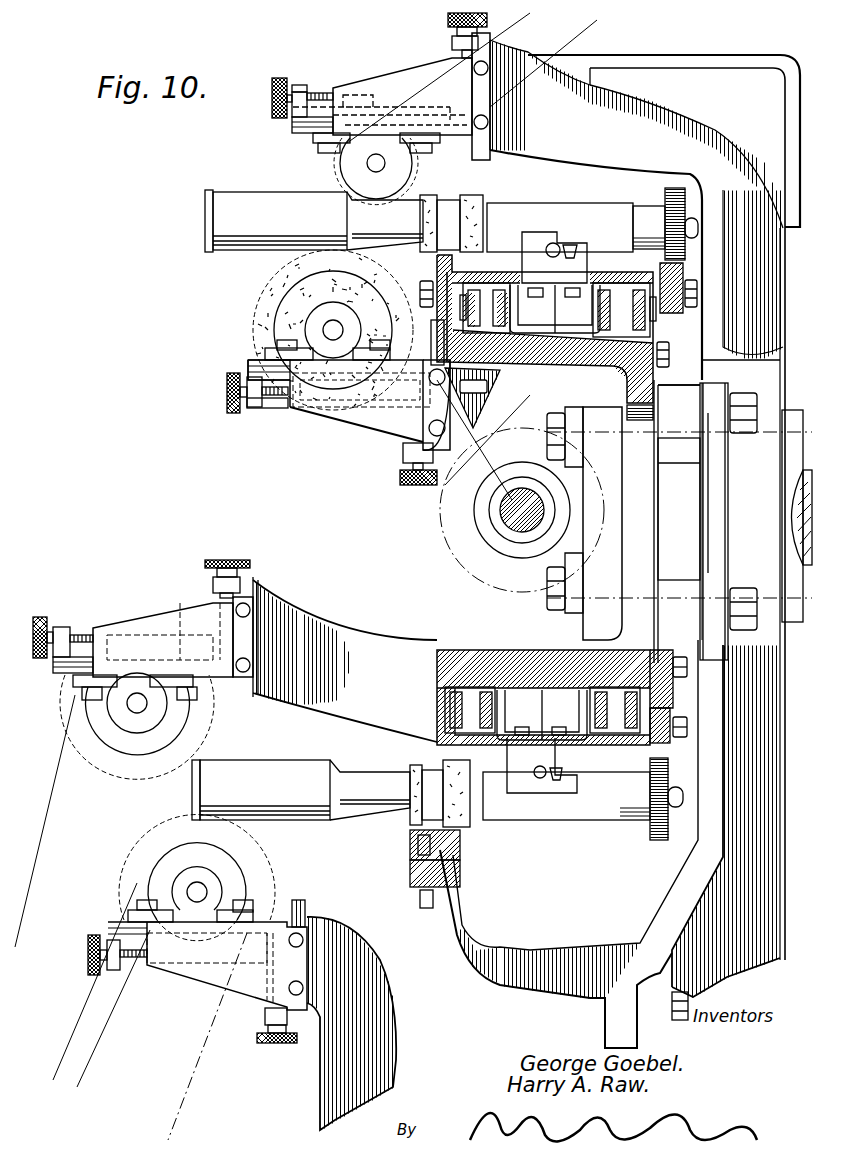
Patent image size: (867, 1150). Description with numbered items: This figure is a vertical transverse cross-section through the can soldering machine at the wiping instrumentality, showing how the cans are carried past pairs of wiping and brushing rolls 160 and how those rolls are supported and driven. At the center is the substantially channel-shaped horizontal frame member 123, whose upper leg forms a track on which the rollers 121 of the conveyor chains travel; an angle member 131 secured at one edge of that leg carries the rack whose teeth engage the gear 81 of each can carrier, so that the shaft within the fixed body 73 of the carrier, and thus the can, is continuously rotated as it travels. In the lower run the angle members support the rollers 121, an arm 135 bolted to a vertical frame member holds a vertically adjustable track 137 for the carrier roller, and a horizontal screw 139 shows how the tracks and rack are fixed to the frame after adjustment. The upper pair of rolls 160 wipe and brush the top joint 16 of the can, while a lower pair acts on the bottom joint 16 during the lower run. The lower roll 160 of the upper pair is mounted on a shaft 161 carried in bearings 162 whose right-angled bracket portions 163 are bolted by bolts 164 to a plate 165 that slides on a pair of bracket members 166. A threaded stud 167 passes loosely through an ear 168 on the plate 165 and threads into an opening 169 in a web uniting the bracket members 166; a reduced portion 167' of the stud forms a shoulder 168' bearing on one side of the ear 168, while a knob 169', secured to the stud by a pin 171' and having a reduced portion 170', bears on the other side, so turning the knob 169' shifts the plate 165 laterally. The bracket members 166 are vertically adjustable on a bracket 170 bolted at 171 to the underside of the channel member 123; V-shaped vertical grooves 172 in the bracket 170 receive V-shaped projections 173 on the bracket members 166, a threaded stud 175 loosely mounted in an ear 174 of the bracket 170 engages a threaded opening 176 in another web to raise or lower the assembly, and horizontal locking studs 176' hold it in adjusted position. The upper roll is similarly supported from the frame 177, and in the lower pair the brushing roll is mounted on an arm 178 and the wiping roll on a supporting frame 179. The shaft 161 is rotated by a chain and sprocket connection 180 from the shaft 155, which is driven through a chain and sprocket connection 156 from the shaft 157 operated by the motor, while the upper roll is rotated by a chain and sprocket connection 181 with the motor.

The joint 16 is at (340, 188).
The fixed body 73 is at (574, 511).
The gear 81 is at (665, 193).
The roller 121 is at (603, 728).
The horizontal frame member 123 is at (560, 335).
The angle member 131 is at (648, 700).
The arm 135 is at (490, 920).
The track 137 is at (410, 840).
The horizontal screw 139 is at (410, 862).
The shaft 155 is at (470, 545).
The chain and sprocket connection 156 is at (525, 590).
The shaft 157 is at (782, 510).
The rolls 160 is at (340, 163).
The shaft 161 is at (330, 330).
The bearings 162 is at (310, 312).
The right angled bracket portions 163 is at (268, 345).
The bolts 164 is at (380, 340).
The plate 165 is at (248, 366).
The bracket members 166 is at (355, 432).
The threaded stud 167 is at (179, 672).
The ear 168 is at (157, 673).
The opening 169 is at (173, 686).
The knob 169' is at (238, 574).
The reduced portion 167' is at (324, 75).
The shoulder 168' is at (322, 90).
The bracket 170 is at (491, 398).
The reduced portion 170' is at (290, 133).
The bolts 171 is at (539, 301).
The pin 171' is at (307, 65).
The V-shaped vertical grooves 172 is at (433, 357).
The V-shaped projections 173 is at (428, 420).
The ear 174 is at (410, 470).
The threaded stud 175 is at (415, 487).
The threaded opening 176 is at (369, 388).
The locking studs 176' is at (511, 511).
The frame 177 is at (640, 121).
The arm 178 is at (315, 615).
The supporting frame 179 is at (378, 1008).
The chain and sprocket connection 180 is at (370, 437).
The chain and sprocket connection 181 is at (440, 80).